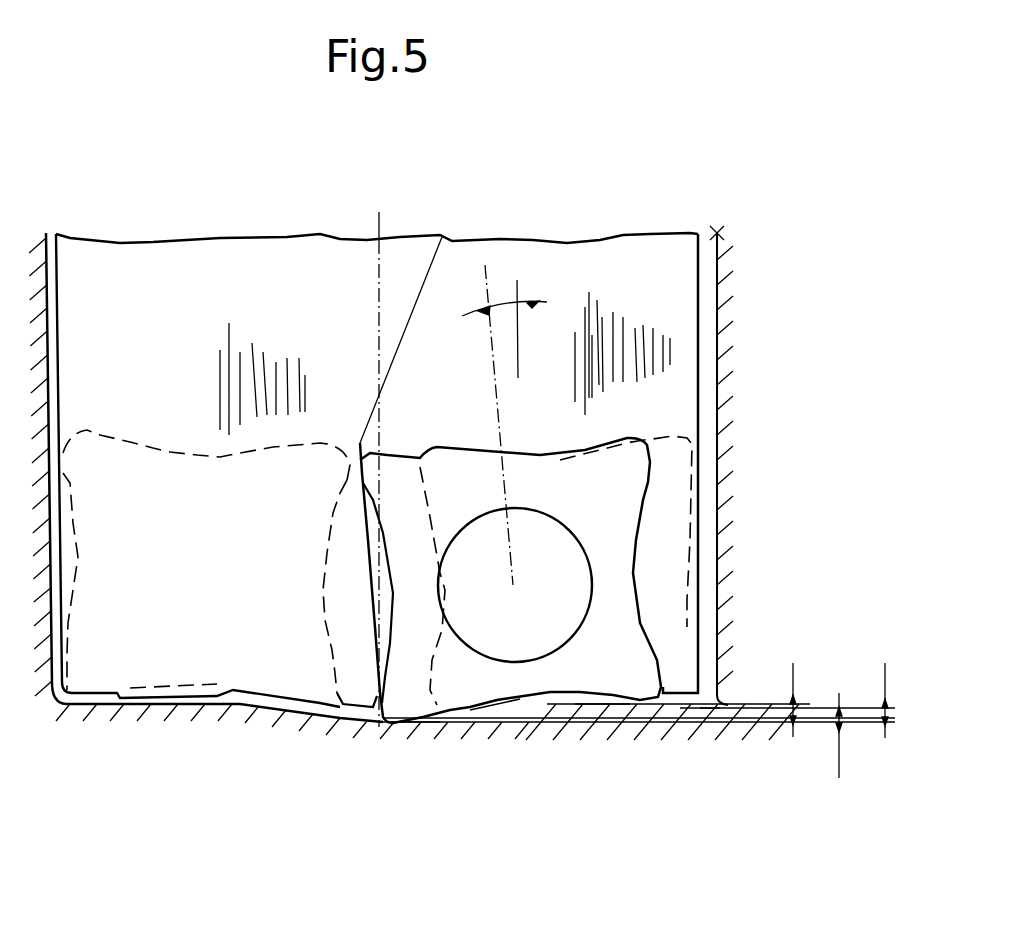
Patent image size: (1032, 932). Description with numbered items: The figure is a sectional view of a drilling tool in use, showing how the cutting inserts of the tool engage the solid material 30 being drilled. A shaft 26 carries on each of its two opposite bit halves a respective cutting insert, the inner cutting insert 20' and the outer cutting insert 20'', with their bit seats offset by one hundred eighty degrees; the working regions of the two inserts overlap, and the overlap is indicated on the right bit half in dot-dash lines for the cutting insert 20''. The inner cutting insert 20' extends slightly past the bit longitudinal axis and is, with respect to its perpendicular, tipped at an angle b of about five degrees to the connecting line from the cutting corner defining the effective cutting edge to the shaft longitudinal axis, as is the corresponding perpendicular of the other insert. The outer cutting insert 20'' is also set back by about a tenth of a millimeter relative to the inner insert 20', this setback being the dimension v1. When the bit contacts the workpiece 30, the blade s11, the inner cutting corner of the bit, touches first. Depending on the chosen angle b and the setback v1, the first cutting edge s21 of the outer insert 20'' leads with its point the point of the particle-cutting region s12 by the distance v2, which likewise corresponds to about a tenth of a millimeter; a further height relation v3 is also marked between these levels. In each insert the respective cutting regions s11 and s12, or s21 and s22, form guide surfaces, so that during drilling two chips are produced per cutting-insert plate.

The shaft 26 is at (308, 290).
The solid material / workpiece 30 is at (722, 231).
The outer cutting insert 20'' is at (220, 537).
The inner cutting insert 20' is at (597, 494).
The tipping angle b is at (504, 315).
The inner cutting region of the inner cutting insert s11 is at (413, 722).
The first cutting edge of the outer cutting insert s21 is at (493, 708).
The particle-cutting region of the inner cutting insert s12 is at (600, 704).
The outer cutting region of the outer cutting insert s22 is at (697, 710).
The setback v1 is at (822, 738).
The lead distance v2 is at (872, 688).
The vertical offset v3 is at (779, 689).